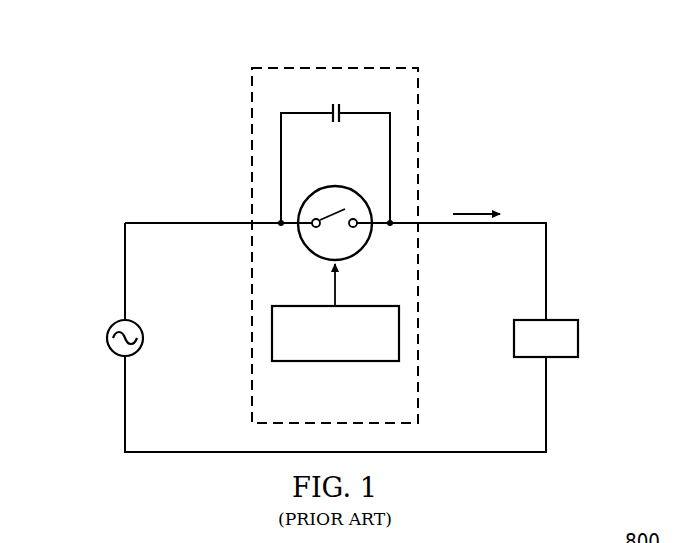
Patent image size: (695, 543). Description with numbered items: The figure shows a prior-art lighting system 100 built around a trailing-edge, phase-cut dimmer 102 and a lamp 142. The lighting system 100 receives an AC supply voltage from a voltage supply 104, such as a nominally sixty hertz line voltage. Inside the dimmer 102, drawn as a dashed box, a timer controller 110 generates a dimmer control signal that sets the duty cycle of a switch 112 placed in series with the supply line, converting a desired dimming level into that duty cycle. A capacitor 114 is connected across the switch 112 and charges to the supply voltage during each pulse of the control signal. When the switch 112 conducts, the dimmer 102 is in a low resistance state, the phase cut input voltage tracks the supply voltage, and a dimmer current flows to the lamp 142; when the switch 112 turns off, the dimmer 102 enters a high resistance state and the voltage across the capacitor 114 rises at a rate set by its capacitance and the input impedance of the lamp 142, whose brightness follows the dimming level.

The lighting system 100 is at (195, 91).
The trailing-edge phase-cut dimmer 102 is at (299, 67).
The voltage supply 104 is at (106, 335).
The timer controller 110 is at (327, 362).
The switch 112 is at (310, 252).
The capacitor 114 is at (335, 124).
The lamp 142 is at (579, 338).